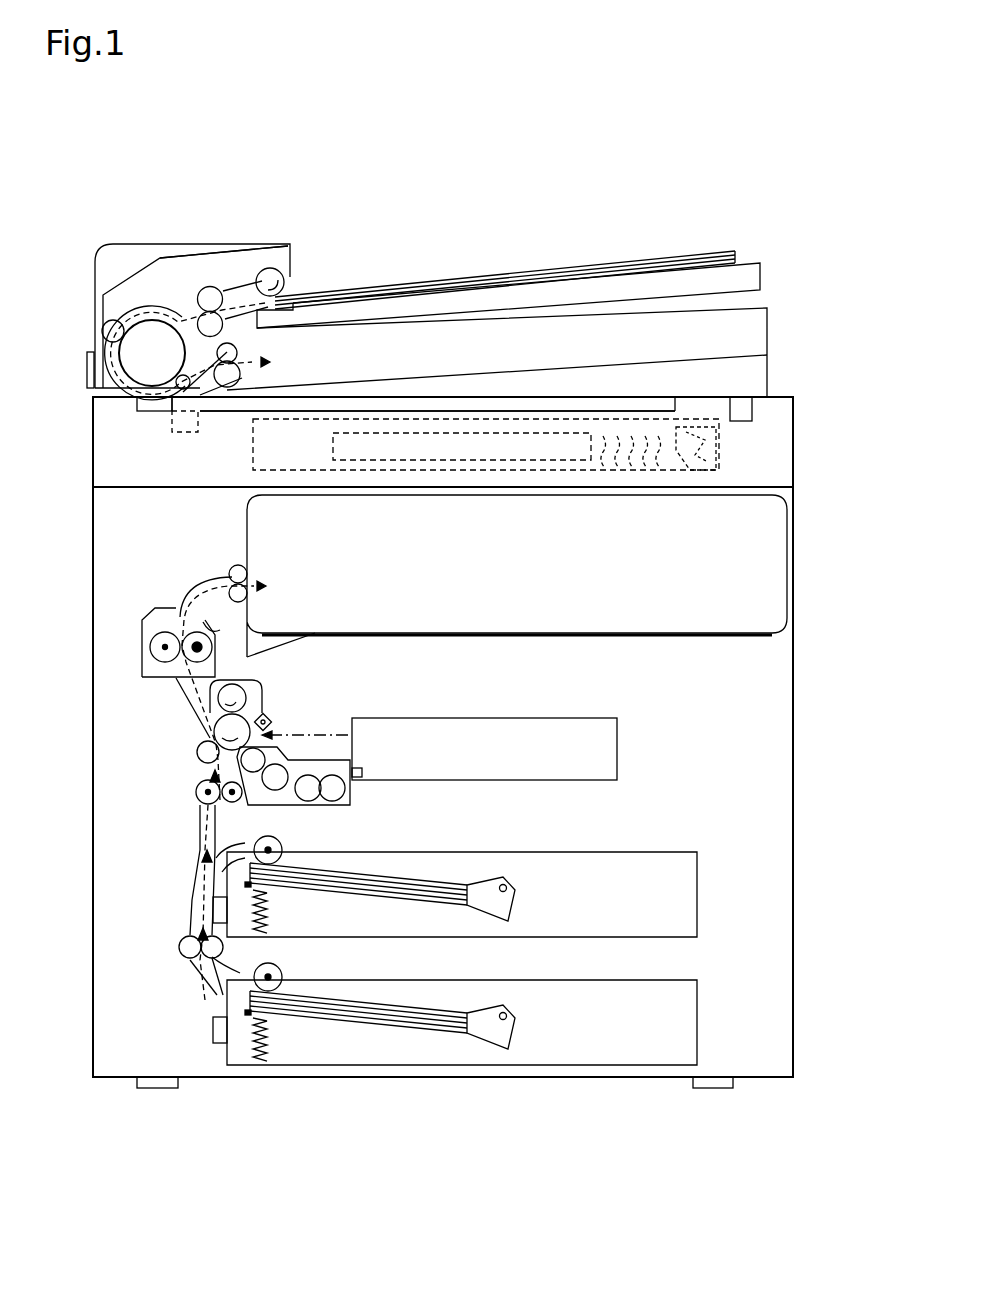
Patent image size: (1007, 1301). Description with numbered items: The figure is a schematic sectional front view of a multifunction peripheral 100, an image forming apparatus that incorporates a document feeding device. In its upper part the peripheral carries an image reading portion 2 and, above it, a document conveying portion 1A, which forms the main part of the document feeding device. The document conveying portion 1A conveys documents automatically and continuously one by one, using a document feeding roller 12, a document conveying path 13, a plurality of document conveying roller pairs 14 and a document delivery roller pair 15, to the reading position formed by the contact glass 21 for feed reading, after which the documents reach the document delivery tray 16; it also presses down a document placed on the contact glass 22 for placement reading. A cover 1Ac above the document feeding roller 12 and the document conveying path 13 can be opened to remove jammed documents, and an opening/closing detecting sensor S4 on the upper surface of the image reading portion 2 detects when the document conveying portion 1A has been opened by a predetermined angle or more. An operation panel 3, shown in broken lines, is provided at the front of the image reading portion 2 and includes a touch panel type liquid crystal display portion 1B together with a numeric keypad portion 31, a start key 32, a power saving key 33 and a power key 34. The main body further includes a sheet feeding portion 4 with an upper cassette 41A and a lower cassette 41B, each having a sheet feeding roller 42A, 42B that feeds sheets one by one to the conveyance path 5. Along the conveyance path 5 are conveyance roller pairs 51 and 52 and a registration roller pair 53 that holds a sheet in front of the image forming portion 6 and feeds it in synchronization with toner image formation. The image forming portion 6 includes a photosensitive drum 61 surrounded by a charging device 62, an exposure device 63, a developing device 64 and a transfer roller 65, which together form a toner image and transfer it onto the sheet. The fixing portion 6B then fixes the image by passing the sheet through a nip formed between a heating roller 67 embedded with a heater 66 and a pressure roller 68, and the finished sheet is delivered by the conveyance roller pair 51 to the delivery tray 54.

The multifunction peripheral 100 is at (635, 215).
The document conveying portion 1A is at (113, 243).
The cover 1Ac is at (178, 245).
The liquid crystal display portion 1B is at (432, 458).
The image reading portion 2 is at (797, 485).
The operation panel 3 is at (250, 452).
The sheet feeding portion 4 is at (521, 967).
The conveyance path 5 is at (200, 843).
The image forming portion 6 is at (305, 695).
The fixing portion 6B is at (140, 620).
The document feeding roller 12 is at (284, 279).
The document conveying path 13 is at (141, 320).
The document conveying roller pairs 14 is at (213, 294).
The document delivery roller pair 15 is at (241, 375).
The document delivery tray 16 is at (457, 375).
The contact glass for feed reading 21 is at (752, 272).
The contact glass for placement reading 22 is at (519, 409).
The numeric keypad portion 31 is at (628, 470).
The start key 32 is at (695, 470).
The power saving key 33 is at (672, 425).
The power key 34 is at (692, 428).
The opening/closing detecting sensor S4 is at (752, 412).
The upper cassette 41A is at (599, 852).
The lower cassette 41B is at (582, 1068).
The upper sheet feeding roller 42A is at (283, 845).
The lower sheet feeding roller 42B is at (283, 972).
The conveyance roller pair 51 is at (237, 565).
The conveyance roller pair 52 is at (178, 947).
The registration roller pair 53 is at (196, 795).
The delivery tray 54 is at (504, 633).
The photosensitive drum 61 is at (222, 728).
The charging device 62 is at (268, 712).
The exposure device 63 is at (482, 778).
The developing device 64 is at (355, 797).
The transfer roller 65 is at (197, 752).
The heater 66 is at (194, 630).
The heating roller 67 is at (212, 628).
The pressure roller 68 is at (150, 647).